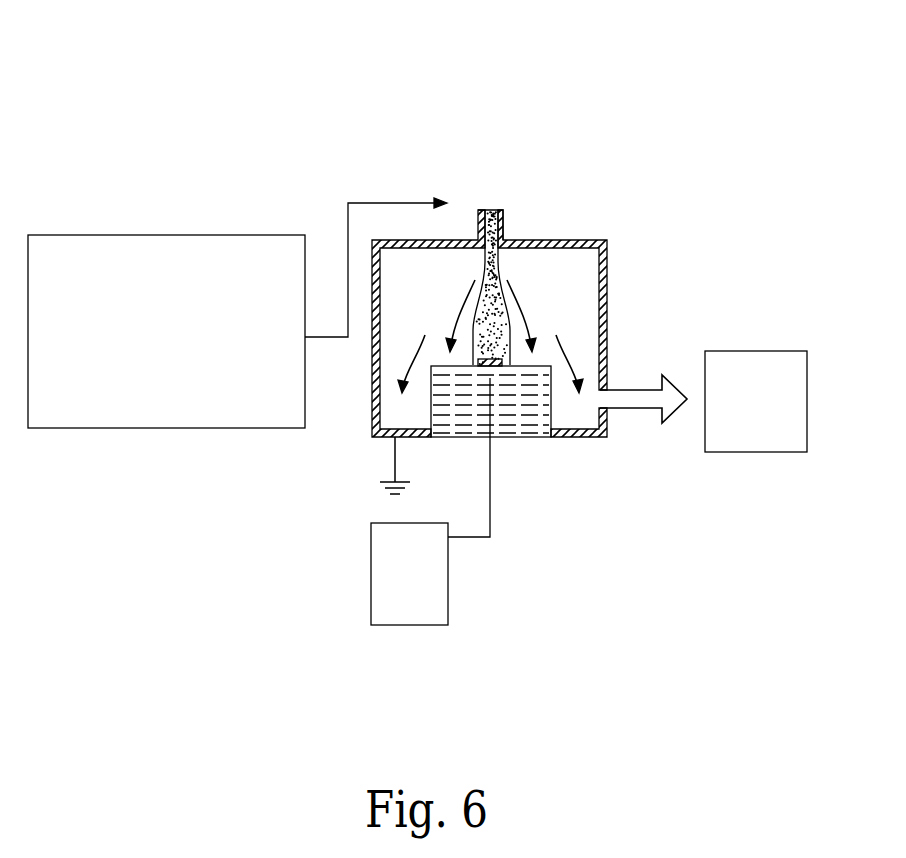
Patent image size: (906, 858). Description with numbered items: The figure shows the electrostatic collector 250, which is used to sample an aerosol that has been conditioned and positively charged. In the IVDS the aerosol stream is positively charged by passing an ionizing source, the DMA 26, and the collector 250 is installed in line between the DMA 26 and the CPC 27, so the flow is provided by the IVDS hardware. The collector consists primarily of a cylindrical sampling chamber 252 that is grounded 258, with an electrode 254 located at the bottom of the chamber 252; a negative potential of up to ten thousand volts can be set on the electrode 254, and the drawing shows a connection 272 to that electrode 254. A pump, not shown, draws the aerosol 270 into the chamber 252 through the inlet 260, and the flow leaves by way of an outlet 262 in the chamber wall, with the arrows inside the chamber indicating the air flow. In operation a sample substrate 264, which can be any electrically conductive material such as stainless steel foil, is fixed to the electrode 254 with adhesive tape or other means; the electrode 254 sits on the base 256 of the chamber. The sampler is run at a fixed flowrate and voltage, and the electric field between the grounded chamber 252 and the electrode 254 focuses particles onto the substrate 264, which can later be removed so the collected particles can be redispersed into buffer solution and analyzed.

The electrostatic collector 250 is at (660, 90).
The DMA 26 is at (144, 353).
The CPC 27 is at (740, 416).
The cylindrical sampling chamber 252 is at (607, 270).
The electrode 254 is at (516, 440).
The chamber base 256 is at (552, 437).
The ground 258 is at (382, 485).
The inlet 260 is at (490, 210).
The outlet 262 is at (610, 408).
The sample substrate 264 is at (502, 363).
The aerosol 270 is at (498, 272).
The bias power supply 272 is at (390, 582).